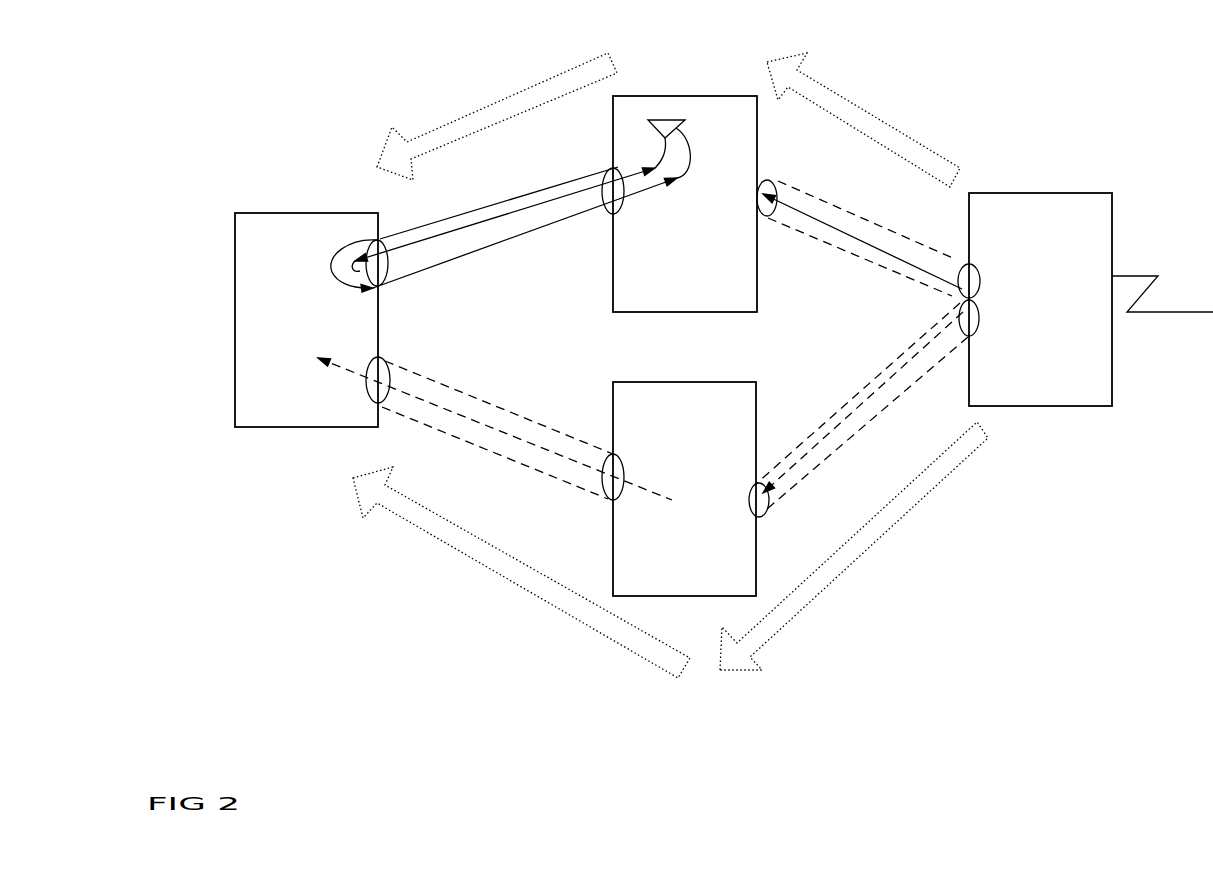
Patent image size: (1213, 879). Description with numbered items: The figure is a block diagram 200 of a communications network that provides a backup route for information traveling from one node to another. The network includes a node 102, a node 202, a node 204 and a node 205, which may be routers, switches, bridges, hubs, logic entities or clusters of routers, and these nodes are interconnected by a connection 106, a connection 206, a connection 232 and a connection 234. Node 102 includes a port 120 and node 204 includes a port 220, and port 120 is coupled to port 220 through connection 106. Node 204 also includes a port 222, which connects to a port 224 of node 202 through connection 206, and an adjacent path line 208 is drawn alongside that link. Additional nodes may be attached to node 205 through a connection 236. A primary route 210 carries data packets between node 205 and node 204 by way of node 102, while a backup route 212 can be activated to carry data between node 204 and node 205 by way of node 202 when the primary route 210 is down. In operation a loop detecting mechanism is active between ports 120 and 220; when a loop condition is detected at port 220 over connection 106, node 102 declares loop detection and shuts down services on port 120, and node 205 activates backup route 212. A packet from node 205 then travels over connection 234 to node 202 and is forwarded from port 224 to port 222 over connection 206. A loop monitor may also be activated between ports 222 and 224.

The block diagram 200 is at (990, 762).
The node 102 is at (663, 95).
The connection 106 is at (537, 188).
The port 120 is at (613, 214).
The node 202 is at (672, 382).
The node 204 is at (323, 212).
The node 205 is at (997, 192).
The connection 206 is at (517, 463).
The media path line 208 is at (560, 453).
The primary route 210 is at (542, 83).
The backup route 212 is at (647, 658).
The port 220 is at (383, 275).
The port 222 is at (378, 395).
The port 224 is at (613, 490).
The connection 232 is at (793, 200).
The connection 234 is at (810, 453).
The connection 236 is at (1203, 315).